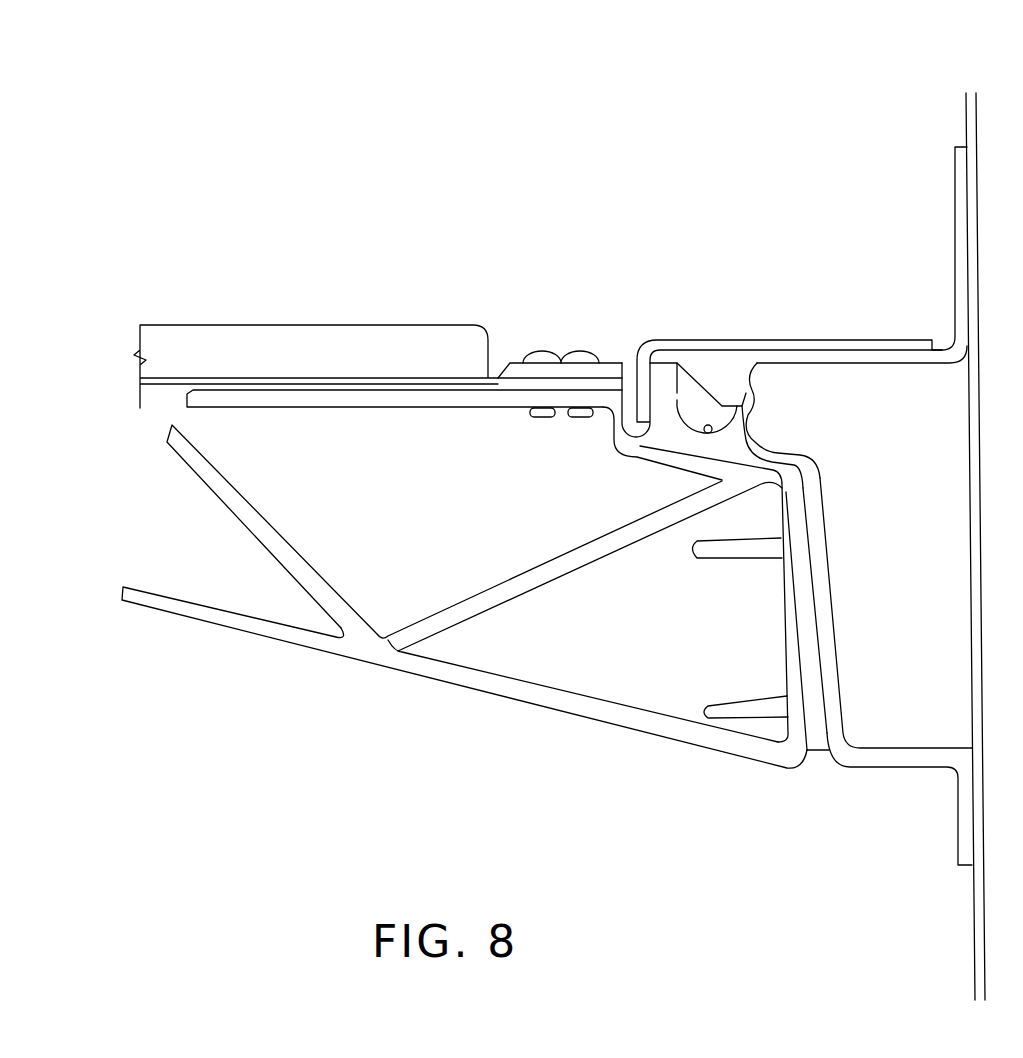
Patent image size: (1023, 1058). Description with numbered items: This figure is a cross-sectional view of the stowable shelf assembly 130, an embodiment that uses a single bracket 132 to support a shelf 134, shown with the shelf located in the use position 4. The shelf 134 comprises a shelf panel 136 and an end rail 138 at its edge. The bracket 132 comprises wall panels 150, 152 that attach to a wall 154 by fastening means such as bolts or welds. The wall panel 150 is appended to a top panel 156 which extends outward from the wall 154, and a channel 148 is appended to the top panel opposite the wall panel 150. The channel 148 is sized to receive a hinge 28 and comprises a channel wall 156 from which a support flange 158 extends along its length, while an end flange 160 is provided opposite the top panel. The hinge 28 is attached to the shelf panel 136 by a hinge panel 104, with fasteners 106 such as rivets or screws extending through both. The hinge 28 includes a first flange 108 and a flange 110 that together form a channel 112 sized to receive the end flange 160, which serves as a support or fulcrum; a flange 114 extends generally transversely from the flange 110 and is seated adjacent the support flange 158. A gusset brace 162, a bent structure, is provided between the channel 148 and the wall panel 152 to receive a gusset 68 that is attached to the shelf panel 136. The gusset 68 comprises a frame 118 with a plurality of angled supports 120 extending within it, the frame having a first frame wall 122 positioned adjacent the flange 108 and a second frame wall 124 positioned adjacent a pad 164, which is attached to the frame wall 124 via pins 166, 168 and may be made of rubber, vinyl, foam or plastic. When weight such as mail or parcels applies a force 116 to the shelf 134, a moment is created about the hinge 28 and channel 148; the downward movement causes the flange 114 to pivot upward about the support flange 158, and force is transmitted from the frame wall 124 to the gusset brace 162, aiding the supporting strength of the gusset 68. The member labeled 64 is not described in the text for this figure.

The use position 4 is at (435, 95).
The hinge 28 is at (622, 352).
The upper flange plate 64 is at (825, 340).
The gusset 68 is at (446, 686).
The hinge panel 104 is at (512, 362).
The fasteners 106 is at (573, 351).
The first flange 108 is at (613, 443).
The flange 110 is at (685, 417).
The channel 112 is at (677, 398).
The flange 114 is at (760, 402).
The force 116 is at (154, 245).
The frame 118 is at (245, 560).
The angled supports 120 is at (310, 563).
The first frame wall 122 is at (606, 428).
The second frame wall 124 is at (777, 612).
The stowable shelf assembly 130 is at (487, 822).
The bracket 132 is at (866, 520).
The shelf 134 is at (125, 472).
The shelf panel 136 is at (273, 378).
The end rail 138 is at (452, 338).
The channel 148 is at (703, 372).
The wall panel 150 is at (955, 222).
The wall panel 152 is at (957, 832).
The wall 154 is at (967, 126).
The top panel 156 is at (937, 350).
The support flange 158 is at (731, 390).
The end flange 160 is at (657, 423).
The gusset brace 162 is at (832, 590).
The pad 164 is at (817, 752).
The pin 166 is at (718, 706).
The pin 168 is at (713, 552).